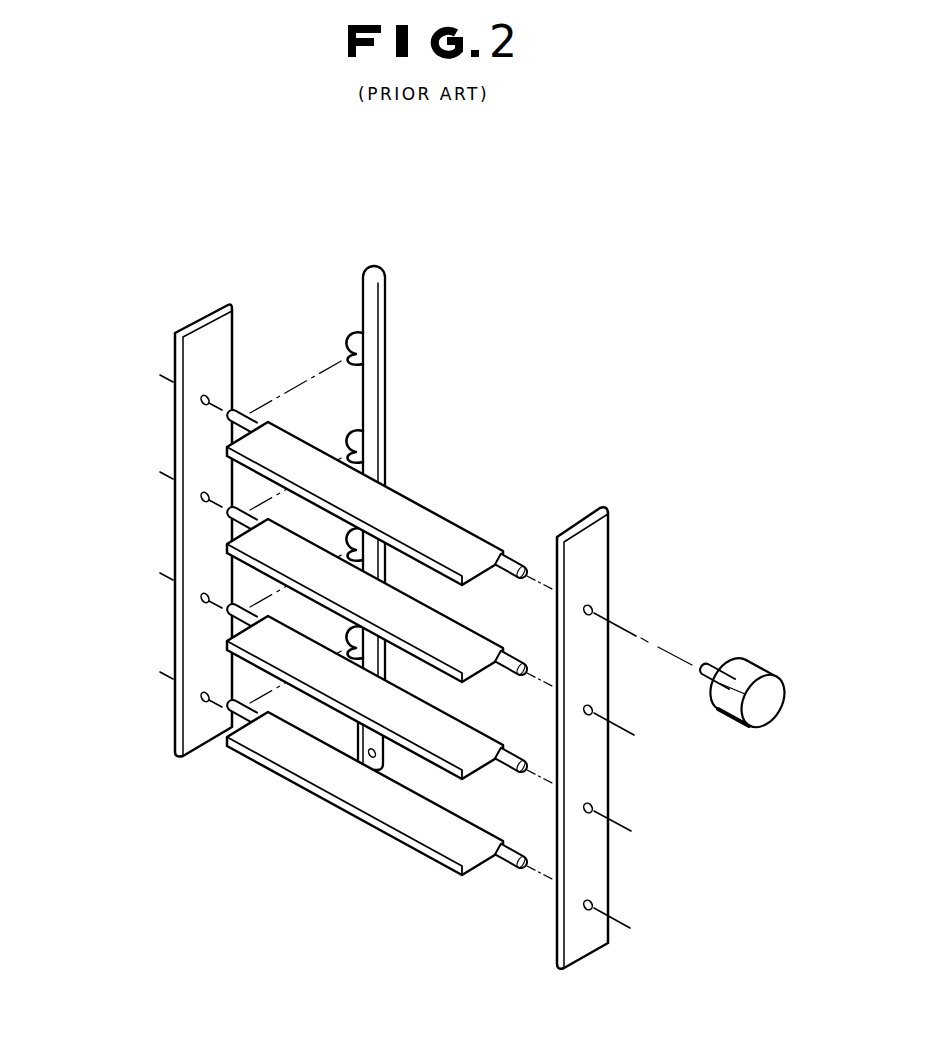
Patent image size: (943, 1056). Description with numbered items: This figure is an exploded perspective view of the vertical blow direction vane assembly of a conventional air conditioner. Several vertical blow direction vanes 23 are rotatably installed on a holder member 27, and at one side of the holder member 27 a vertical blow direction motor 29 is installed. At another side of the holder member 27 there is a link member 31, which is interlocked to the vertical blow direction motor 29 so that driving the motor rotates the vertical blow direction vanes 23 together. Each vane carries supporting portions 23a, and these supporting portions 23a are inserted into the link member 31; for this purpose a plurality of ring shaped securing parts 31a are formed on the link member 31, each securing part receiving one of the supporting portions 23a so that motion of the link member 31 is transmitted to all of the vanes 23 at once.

The vertical blow direction vanes 23 is at (252, 466).
The supporting portions 23a is at (243, 412).
The holder member 27 is at (578, 878).
The vertical blow direction motor 29 is at (759, 716).
The link member 31 is at (383, 290).
The ring shaped securing parts 31a is at (345, 338).